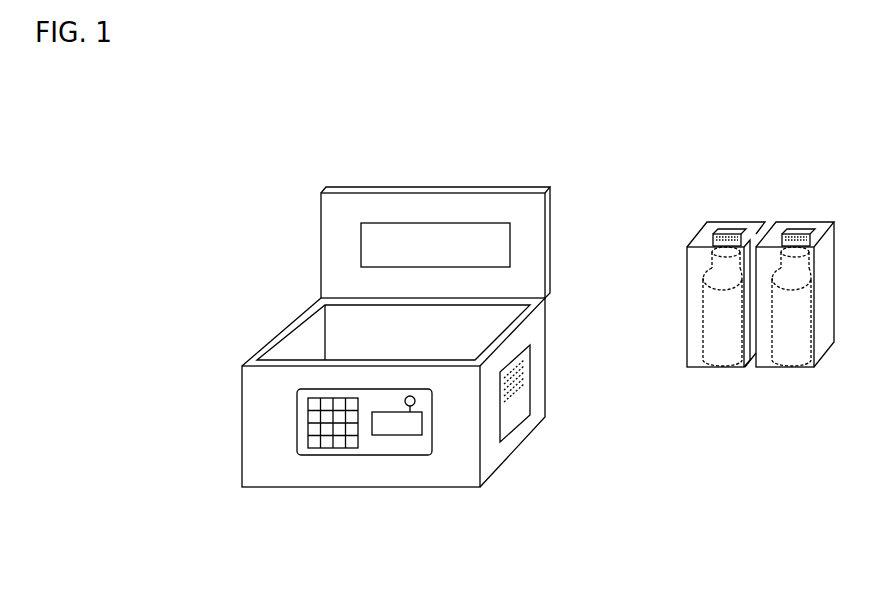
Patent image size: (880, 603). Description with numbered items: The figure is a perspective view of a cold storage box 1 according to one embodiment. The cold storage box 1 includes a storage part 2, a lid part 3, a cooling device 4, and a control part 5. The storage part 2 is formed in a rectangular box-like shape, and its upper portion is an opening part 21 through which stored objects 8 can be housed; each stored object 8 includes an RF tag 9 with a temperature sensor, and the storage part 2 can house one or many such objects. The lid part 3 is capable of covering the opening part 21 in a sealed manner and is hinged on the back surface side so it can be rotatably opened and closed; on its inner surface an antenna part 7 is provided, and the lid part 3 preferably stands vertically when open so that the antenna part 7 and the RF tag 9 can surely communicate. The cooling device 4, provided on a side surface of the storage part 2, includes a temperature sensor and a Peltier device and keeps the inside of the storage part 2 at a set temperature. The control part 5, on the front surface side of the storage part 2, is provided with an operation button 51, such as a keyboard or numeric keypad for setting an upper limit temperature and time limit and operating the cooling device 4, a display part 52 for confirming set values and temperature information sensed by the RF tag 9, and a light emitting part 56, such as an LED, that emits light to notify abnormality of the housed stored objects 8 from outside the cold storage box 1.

The cold storage box 1 is at (346, 170).
The storage part 2 is at (352, 338).
The opening part 21 is at (273, 340).
The lid part 3 is at (490, 184).
The cooling device 4 is at (527, 390).
The control part 5 is at (402, 457).
The operation button 51 is at (320, 447).
The display part 52 is at (383, 433).
The light emitting part 56 is at (413, 423).
The antenna part 7 is at (393, 250).
The stored object 8 is at (723, 352).
The RF tag 9 is at (725, 232).